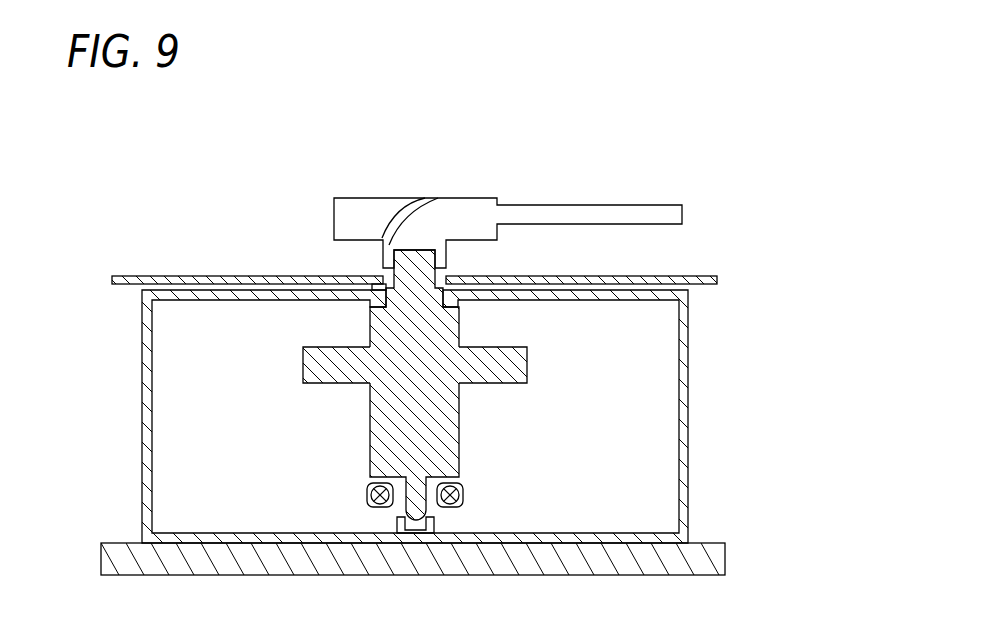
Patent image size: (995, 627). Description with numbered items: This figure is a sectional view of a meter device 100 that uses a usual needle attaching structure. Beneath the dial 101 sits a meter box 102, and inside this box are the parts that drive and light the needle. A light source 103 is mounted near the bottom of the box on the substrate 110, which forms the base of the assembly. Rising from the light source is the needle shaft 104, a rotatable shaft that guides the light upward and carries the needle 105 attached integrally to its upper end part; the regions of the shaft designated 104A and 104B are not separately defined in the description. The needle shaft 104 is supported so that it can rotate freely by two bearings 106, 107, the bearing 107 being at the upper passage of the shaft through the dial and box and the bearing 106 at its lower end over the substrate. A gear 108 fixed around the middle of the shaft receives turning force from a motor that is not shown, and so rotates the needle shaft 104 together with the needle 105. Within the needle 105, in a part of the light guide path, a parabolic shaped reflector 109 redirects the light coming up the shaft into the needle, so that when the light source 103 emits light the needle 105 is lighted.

The drive device 100 is at (686, 163).
The dial 101 is at (143, 276).
The meter box 102 is at (142, 365).
The light source 103 is at (463, 493).
The needle shaft 104 is at (478, 427).
The shaft first portion 104A is at (388, 428).
The shaft second portion 104B is at (459, 458).
The needle 105 is at (585, 203).
The bearing 106 is at (399, 520).
The bearing 107 is at (375, 300).
The gear 108 is at (310, 366).
The parabolic shaped reflector 109 is at (404, 216).
The substrate 110 is at (725, 556).